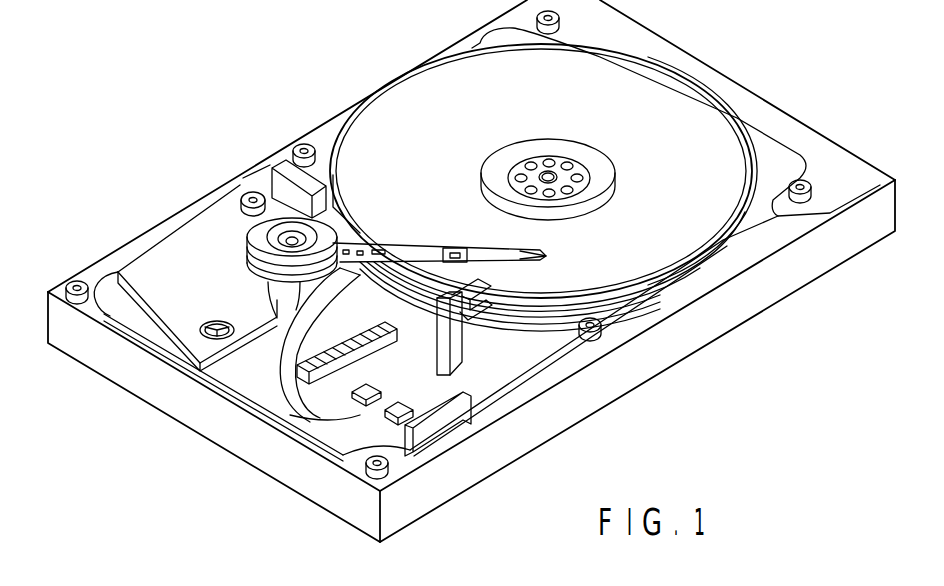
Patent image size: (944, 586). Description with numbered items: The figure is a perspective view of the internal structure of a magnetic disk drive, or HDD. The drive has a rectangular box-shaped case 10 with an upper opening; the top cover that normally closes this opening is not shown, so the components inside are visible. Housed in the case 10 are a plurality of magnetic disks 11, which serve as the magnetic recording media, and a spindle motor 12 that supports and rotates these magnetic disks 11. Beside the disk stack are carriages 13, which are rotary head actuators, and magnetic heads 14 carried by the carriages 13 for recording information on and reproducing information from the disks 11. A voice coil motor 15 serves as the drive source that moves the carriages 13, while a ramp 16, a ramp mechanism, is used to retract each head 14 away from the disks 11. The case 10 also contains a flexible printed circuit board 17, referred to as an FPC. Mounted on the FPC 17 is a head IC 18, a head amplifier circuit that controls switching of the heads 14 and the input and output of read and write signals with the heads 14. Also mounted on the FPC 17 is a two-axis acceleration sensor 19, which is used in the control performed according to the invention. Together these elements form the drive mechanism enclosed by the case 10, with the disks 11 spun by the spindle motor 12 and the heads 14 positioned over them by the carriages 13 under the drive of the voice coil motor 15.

The case 10 is at (793, 273).
The magnetic disks 11 is at (687, 103).
The spindle motor 12 is at (537, 146).
The carriages 13 is at (385, 232).
The magnetic heads 14 is at (546, 263).
The voice coil motor 15 is at (153, 268).
The ramp 16 is at (452, 300).
The flexible printed circuit board 17 is at (432, 364).
The head IC 18 is at (397, 402).
The 2-axis acceleration sensor 19 is at (347, 367).